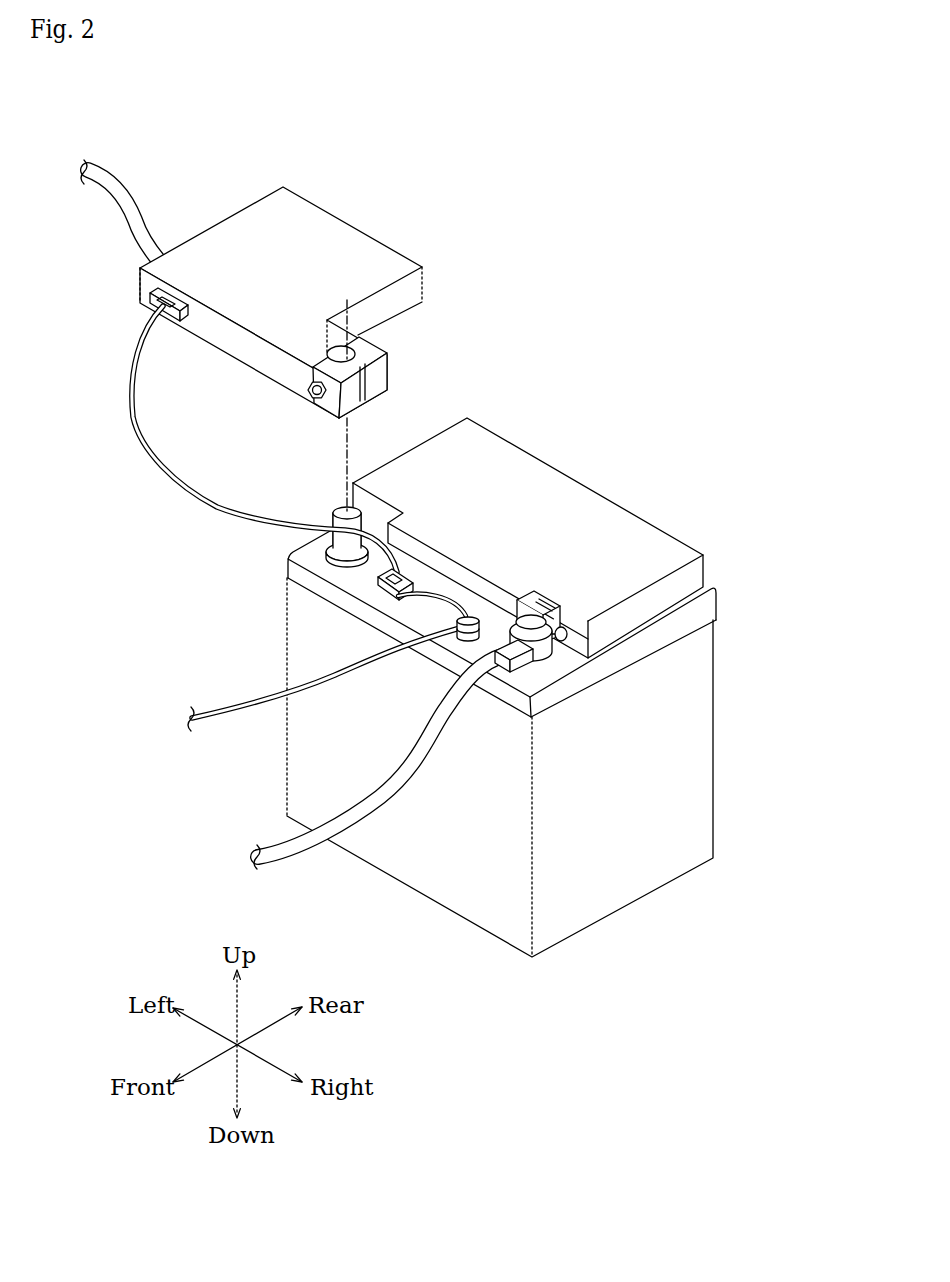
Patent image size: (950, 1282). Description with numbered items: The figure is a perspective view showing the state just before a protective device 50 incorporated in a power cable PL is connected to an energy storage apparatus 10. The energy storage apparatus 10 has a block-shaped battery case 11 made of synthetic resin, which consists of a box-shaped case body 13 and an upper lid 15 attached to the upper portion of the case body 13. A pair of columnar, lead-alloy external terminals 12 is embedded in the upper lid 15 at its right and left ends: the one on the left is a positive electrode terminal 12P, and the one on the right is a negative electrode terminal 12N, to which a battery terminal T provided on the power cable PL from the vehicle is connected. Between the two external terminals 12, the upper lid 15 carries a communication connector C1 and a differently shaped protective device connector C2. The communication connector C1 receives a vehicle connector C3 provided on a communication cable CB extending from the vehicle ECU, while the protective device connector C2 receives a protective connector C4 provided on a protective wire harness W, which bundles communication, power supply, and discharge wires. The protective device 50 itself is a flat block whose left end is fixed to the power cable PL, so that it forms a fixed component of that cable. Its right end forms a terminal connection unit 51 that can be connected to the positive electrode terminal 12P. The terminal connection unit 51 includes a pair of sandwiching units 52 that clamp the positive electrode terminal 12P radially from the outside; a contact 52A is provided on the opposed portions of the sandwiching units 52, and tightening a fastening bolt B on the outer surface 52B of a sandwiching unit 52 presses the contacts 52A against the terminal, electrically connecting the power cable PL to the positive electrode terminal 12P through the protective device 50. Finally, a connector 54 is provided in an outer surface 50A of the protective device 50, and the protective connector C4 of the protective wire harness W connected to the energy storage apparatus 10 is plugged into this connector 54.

The energy storage apparatus 10 is at (557, 618).
The battery case 11 is at (557, 687).
The external terminals 12 is at (443, 488).
The positive electrode terminal 12P is at (349, 511).
The negative electrode terminal 12N is at (531, 620).
The case body 13 is at (703, 670).
The upper lid 15 is at (790, 677).
The protective device 50 is at (294, 292).
The outer surface 50A is at (208, 330).
The terminal connection unit 51 is at (294, 304).
The sandwiching units 52 is at (307, 407).
The contact 52A is at (308, 372).
The outer surface 52B is at (293, 370).
The connector 54 is at (170, 300).
The fastening bolt B is at (311, 398).
The communication connector C1 is at (458, 633).
The protective device connector C2 is at (378, 589).
The vehicle connector C3 is at (456, 626).
The protective connector C4 is at (248, 403).
The communication cable CB is at (247, 722).
The power cable PL is at (112, 176).
The battery terminal T is at (560, 655).
The protective wire harness W is at (153, 453).